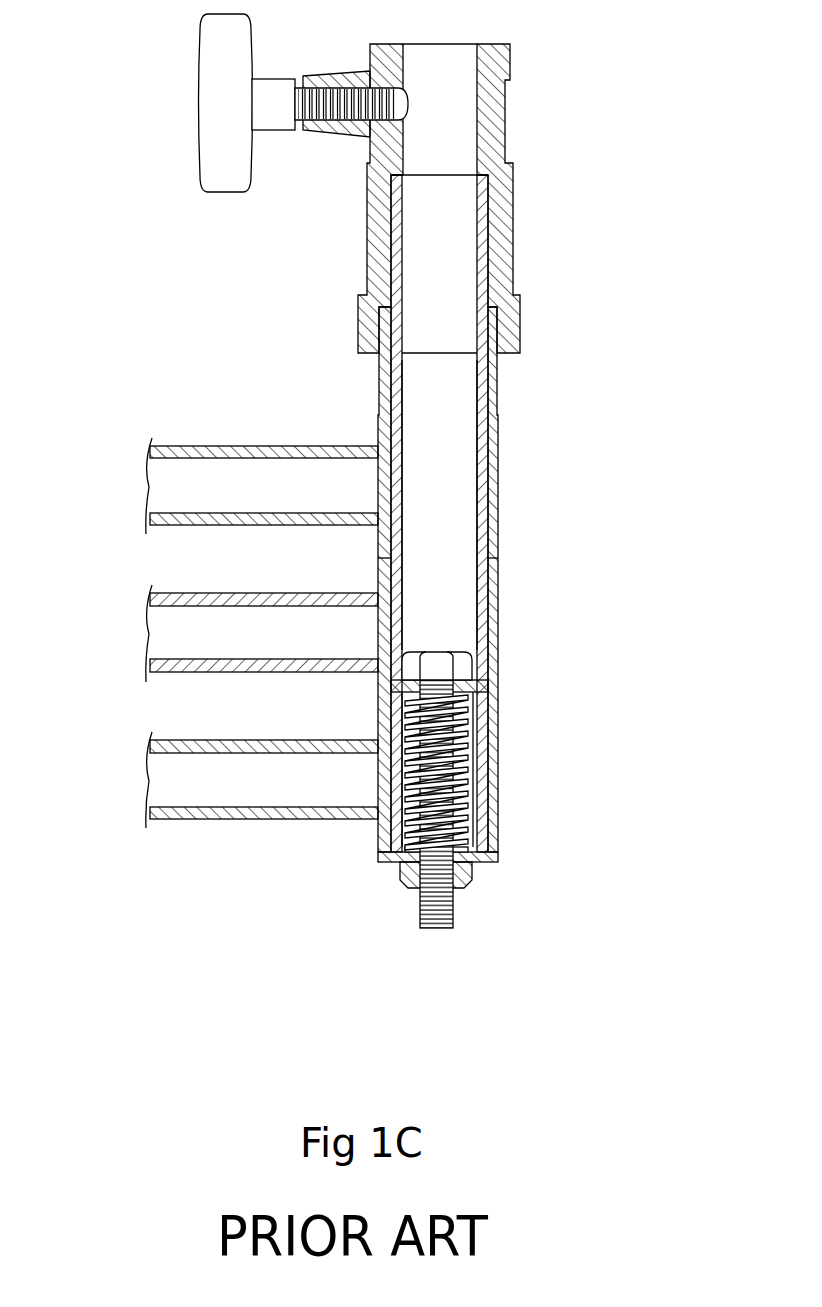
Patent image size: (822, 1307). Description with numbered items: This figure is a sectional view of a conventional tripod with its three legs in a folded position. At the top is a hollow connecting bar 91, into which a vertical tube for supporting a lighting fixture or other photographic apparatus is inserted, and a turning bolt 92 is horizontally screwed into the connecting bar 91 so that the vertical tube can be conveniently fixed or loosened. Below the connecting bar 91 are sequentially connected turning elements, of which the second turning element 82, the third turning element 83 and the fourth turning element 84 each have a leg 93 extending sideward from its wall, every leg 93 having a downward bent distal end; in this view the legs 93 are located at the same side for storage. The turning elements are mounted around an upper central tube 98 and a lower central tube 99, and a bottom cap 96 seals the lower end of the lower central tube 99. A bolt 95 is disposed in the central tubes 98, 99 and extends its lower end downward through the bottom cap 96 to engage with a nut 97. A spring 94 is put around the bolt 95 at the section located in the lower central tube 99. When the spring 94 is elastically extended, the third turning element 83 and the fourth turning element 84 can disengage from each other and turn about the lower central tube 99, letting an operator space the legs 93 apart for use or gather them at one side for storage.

The connecting bar 91 is at (492, 138).
The turning bolt 92 is at (237, 82).
The leg 93 is at (180, 483).
The upper central tube 98 is at (472, 375).
The second turning element 82 is at (490, 448).
The third turning element 83 is at (488, 593).
The bolt 95 is at (450, 738).
The spring 94 is at (453, 797).
The fourth turning element 84 is at (495, 833).
The bottom cap 96 is at (487, 868).
The nut 97 is at (487, 868).
The lower central tube 99 is at (400, 830).